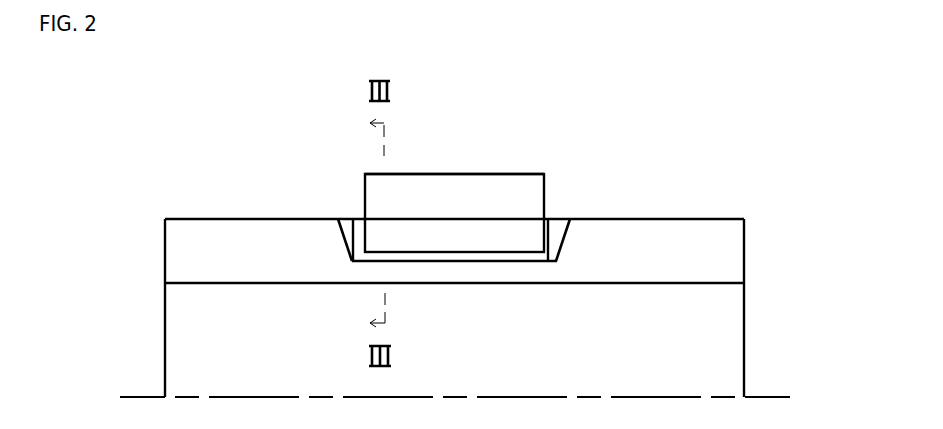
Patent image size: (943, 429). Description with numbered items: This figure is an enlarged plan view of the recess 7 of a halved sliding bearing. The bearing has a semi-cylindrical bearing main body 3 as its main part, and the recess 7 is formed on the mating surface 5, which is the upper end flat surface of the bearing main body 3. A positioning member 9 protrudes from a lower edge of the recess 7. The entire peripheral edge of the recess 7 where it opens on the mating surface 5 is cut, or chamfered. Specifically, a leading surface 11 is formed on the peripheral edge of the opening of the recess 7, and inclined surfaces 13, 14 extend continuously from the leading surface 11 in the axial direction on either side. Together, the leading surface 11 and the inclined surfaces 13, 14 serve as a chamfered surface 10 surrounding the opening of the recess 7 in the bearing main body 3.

The bearing main body 3 is at (732, 352).
The mating surface 5 is at (732, 247).
The recess 7 is at (445, 240).
The positioning member 9 is at (494, 174).
The chamfered surface 10 is at (477, 265).
The leading surface 11 is at (548, 253).
The inclined surface 13 is at (343, 232).
The inclined surface 14 is at (567, 227).